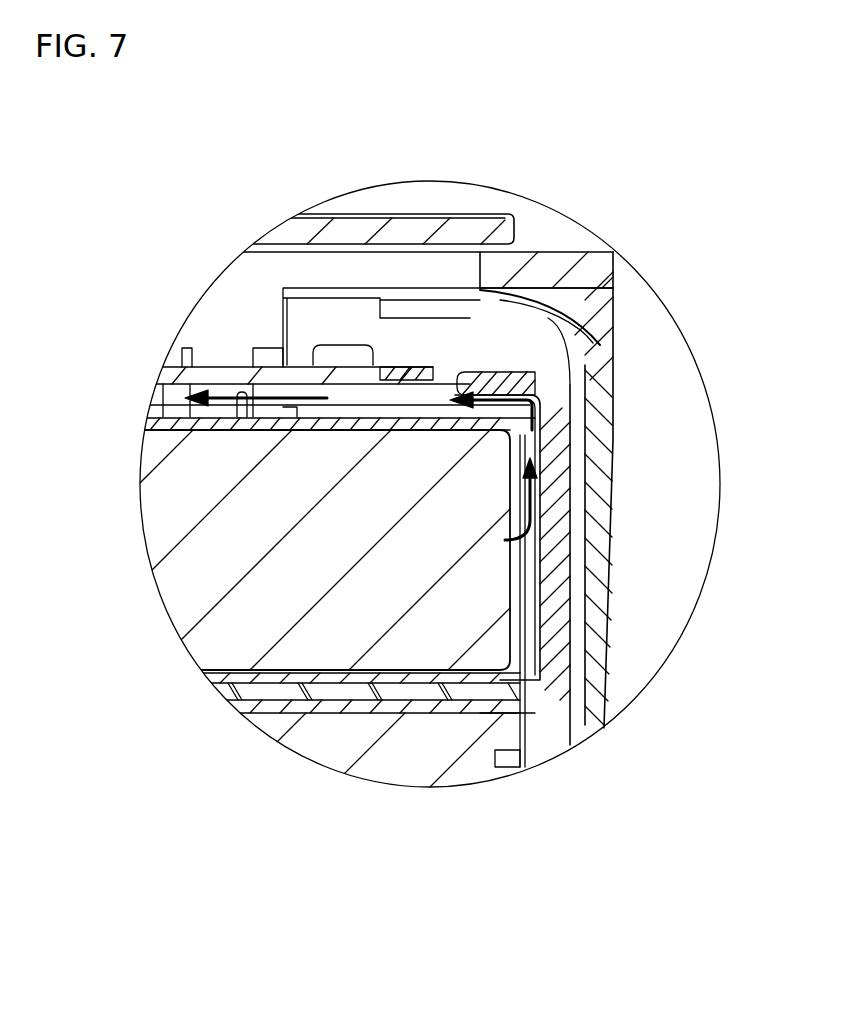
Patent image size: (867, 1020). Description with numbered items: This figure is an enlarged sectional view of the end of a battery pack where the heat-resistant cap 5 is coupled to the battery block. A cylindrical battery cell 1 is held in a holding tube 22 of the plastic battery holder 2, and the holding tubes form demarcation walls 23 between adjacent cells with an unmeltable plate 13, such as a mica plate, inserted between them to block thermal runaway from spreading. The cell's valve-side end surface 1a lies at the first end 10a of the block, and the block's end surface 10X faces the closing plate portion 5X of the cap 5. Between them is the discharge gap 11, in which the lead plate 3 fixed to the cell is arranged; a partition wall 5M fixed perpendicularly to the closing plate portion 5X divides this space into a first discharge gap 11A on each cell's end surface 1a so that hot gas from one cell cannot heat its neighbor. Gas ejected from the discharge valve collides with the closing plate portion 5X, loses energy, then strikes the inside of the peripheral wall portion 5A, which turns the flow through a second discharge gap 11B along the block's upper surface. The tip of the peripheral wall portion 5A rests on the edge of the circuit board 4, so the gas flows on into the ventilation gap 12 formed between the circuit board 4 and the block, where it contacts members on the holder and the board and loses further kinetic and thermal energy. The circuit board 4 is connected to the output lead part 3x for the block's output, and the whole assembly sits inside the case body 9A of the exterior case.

The battery cell 1 is at (329, 563).
The end surface 1a is at (512, 552).
The battery holder 2 is at (163, 414).
The lead plate 3 is at (587, 617).
The output lead part 3x is at (293, 357).
The circuit board 4 is at (222, 370).
The heat-resistant cap 5 is at (752, 293).
The peripheral wall portion 5A is at (600, 348).
The closing plate portion 5X is at (600, 450).
The partition wall 5M is at (557, 753).
The case body 9A is at (612, 488).
The first end 10a is at (443, 393).
The end surface 10X is at (527, 662).
The discharge gap 11 is at (443, 832).
The first discharge gap 11A is at (442, 430).
The second discharge gap 11B is at (353, 440).
The ventilation gap 12 is at (187, 418).
The unmeltable plate 13 is at (270, 693).
The holding tube 22 is at (252, 423).
The demarcation wall 23 is at (288, 668).